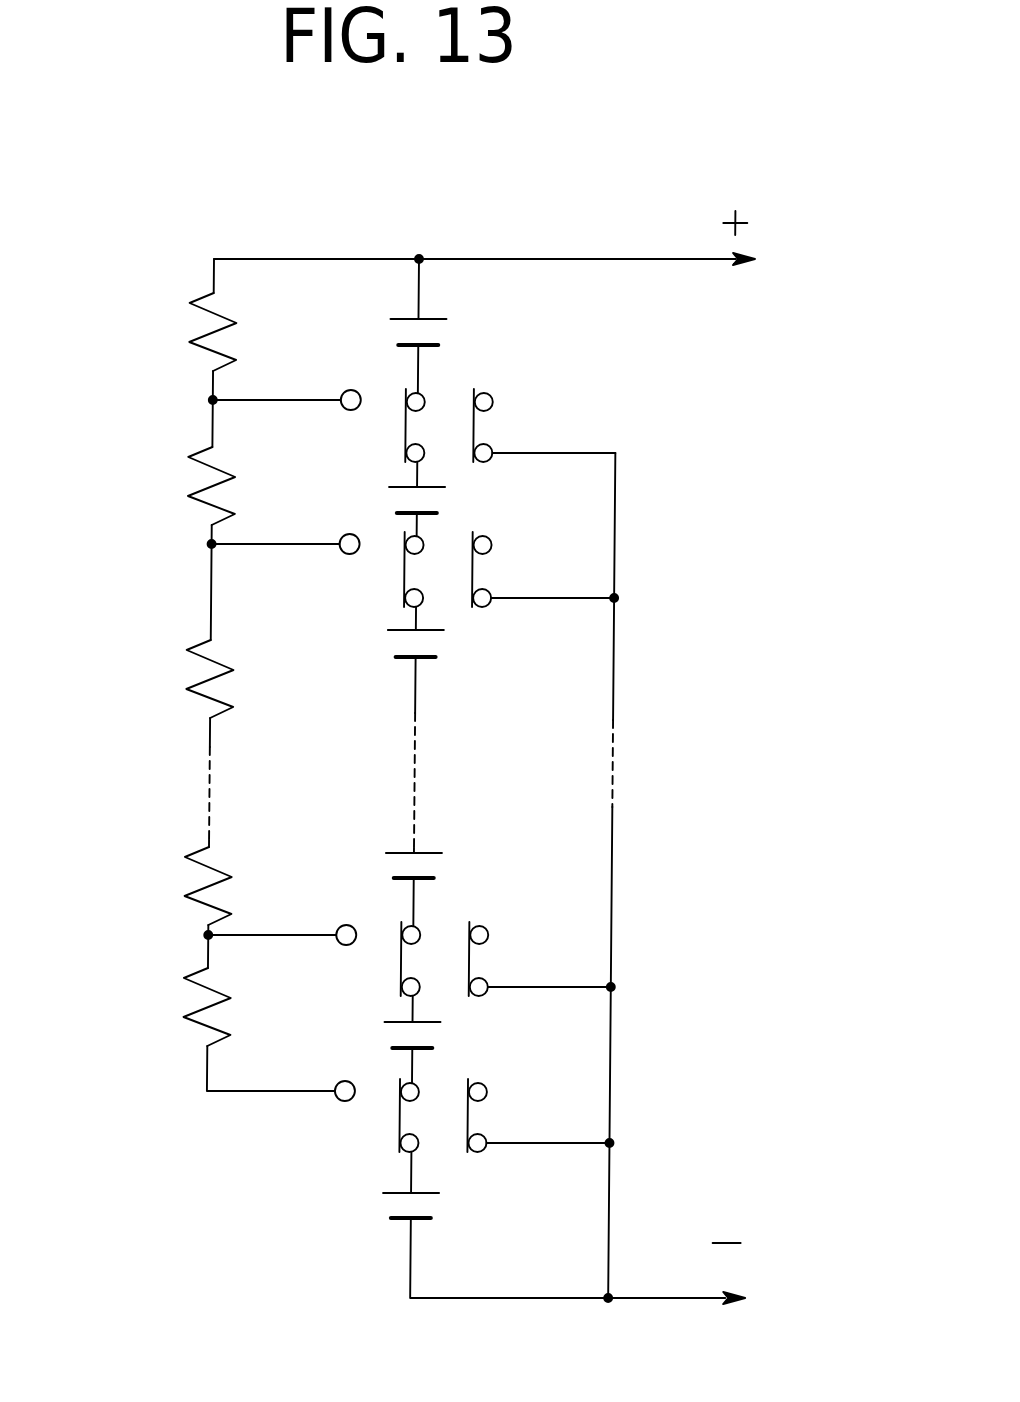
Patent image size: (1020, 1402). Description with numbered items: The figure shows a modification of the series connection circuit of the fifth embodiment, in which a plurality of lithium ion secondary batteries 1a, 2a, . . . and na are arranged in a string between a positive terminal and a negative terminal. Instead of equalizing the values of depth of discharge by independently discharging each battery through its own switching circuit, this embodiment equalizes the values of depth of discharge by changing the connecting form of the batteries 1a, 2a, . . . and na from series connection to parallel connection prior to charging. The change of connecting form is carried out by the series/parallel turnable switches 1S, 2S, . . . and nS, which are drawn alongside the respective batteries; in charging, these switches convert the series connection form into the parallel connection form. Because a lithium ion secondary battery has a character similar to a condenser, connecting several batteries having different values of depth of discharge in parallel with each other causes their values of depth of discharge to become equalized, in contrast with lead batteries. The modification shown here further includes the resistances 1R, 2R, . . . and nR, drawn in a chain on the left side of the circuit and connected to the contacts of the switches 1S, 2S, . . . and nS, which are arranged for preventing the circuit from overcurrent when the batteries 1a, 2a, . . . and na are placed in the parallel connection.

The resistance 1R is at (182, 345).
The resistance 2R is at (180, 500).
The resistance nR is at (180, 1020).
The series/parallel turnable switch 1S is at (391, 418).
The series/parallel turnable switch 2S is at (390, 577).
The series/parallel turnable switch nS is at (388, 1108).
The battery 1a is at (458, 324).
The battery 2a is at (449, 497).
The battery na is at (447, 1207).